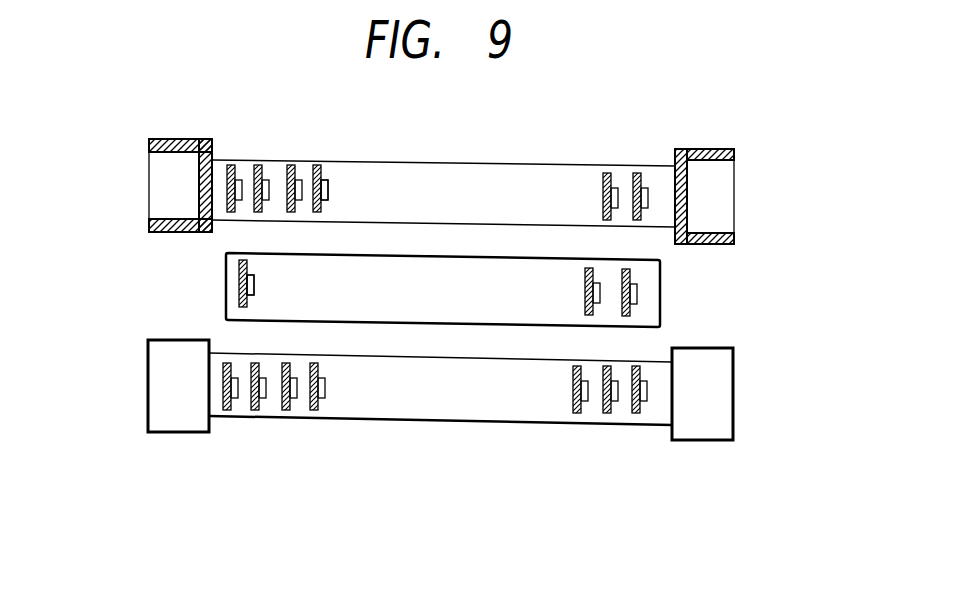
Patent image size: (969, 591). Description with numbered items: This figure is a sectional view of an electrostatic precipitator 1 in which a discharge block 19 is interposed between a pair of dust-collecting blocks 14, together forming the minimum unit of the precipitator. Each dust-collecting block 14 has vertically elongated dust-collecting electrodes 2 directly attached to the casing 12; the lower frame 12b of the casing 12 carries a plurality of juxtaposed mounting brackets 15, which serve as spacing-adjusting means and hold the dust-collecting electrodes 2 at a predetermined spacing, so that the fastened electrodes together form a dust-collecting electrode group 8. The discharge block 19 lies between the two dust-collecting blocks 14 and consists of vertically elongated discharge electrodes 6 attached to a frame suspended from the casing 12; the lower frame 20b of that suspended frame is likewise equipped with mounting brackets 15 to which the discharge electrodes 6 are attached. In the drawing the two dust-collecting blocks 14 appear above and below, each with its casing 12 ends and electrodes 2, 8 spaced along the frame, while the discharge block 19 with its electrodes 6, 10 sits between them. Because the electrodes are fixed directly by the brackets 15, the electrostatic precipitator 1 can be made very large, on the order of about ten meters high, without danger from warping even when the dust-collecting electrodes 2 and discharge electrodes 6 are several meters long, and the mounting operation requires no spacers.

The electrostatic precipitator 1 is at (135, 413).
The dust-collecting electrode 2 is at (316, 165).
The discharge electrode 6 is at (238, 276).
The dust-collecting electrode group 8 is at (598, 198).
The contact 10 is at (580, 292).
The casing 12 is at (700, 152).
The lower frame 12b is at (486, 170).
The dust-collecting block 14 is at (740, 200).
The mounting bracket 15 is at (328, 188).
The discharge block 19 is at (687, 295).
The lower frame 20b is at (650, 302).